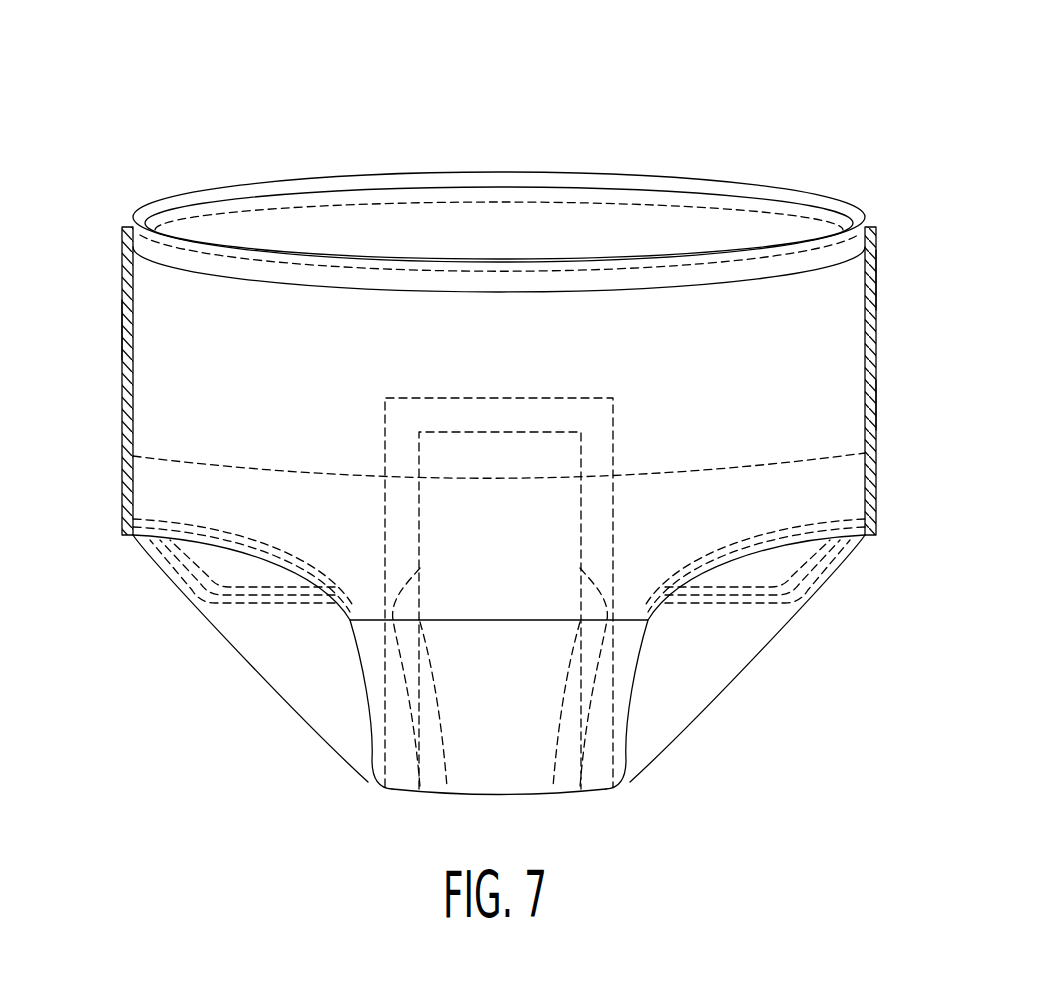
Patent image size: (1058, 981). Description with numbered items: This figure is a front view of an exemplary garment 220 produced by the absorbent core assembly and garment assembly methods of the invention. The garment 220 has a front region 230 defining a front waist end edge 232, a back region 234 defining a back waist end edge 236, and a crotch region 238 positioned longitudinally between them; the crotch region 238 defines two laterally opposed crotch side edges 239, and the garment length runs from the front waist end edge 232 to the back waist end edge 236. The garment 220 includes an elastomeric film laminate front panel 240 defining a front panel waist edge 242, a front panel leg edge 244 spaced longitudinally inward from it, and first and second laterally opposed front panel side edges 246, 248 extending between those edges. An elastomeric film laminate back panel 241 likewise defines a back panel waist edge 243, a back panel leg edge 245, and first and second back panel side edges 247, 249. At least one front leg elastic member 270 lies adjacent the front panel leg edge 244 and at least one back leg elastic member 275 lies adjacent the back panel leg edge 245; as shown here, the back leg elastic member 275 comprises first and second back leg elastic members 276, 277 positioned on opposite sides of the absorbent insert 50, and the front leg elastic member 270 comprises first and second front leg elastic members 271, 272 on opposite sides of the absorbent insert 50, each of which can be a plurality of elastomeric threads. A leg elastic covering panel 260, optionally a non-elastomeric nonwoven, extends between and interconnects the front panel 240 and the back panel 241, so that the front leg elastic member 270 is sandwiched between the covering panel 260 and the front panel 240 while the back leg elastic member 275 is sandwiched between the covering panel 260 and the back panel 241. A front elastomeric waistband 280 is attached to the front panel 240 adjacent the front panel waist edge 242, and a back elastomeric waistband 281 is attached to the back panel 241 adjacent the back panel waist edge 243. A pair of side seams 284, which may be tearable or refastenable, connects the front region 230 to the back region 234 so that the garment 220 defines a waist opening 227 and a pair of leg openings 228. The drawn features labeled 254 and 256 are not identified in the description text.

The garment 220 is at (531, 125).
The waist opening 227 is at (436, 125).
The leg openings 228 is at (240, 690).
The front region 230 is at (205, 377).
The front waist end edge 232 is at (457, 259).
The back region 234 is at (503, 235).
The back waist end edge 236 is at (715, 180).
The crotch region 238 is at (572, 803).
The crotch side edges 239 is at (365, 785).
The front panel 240 is at (751, 353).
The back panel 241 is at (247, 180).
The front panel waist edge 242 is at (626, 281).
The back panel waist edge 243 is at (342, 176).
The front panel leg edge 244 is at (273, 558).
The back panel leg edge 245 is at (274, 612).
The first front panel side edge 246 is at (876, 405).
The first back panel side edge 247 is at (876, 280).
The second front panel side edge 248 is at (122, 458).
The second back panel side edge 249 is at (122, 335).
The absorbent core 254 is at (440, 530).
The leg cuff elastics 256 is at (555, 735).
The leg elastic covering panel 260 is at (240, 470).
The front leg elastic member 270 is at (215, 520).
The first front leg elastic member 271 is at (280, 541).
The second front leg elastic member 272 is at (700, 545).
The back leg elastic member 275 is at (178, 563).
The first back leg elastic member 276 is at (181, 592).
The second back leg elastic member 277 is at (815, 588).
The front elastomeric waistband 280 is at (575, 262).
The back elastomeric waistband 281 is at (580, 178).
The side seams 284 is at (122, 273).
The absorbent insert 50 is at (614, 410).